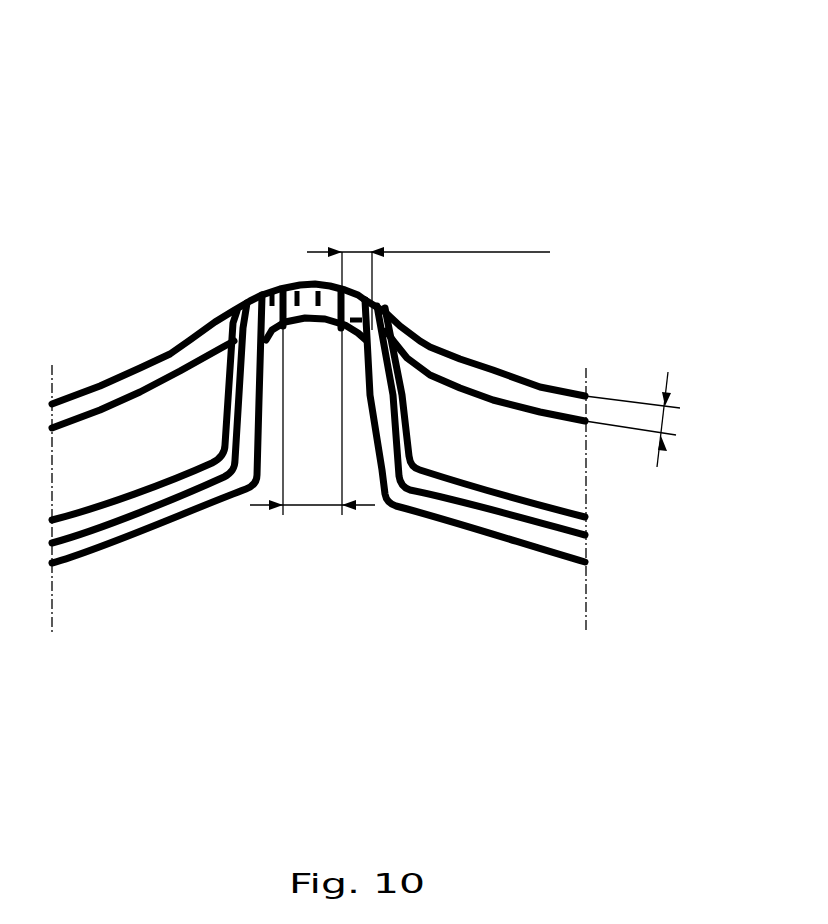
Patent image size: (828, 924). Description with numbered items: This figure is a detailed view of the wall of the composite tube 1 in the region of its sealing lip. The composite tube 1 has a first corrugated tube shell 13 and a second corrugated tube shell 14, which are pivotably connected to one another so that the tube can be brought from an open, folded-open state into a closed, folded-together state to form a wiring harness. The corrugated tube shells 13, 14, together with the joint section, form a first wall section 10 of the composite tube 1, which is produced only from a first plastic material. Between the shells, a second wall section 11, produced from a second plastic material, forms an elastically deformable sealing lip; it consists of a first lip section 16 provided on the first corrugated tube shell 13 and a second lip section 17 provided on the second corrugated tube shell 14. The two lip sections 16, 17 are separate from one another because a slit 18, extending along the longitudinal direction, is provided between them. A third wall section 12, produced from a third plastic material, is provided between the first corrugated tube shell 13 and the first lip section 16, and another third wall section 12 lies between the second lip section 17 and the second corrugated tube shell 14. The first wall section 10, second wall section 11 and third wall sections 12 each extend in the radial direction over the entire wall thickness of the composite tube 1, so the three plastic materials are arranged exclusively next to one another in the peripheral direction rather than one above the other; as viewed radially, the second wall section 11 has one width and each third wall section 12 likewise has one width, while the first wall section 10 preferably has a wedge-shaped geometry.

The composite tube 1 is at (162, 90).
The first wall section 10 is at (108, 622).
The second wall section 11 is at (244, 128).
The third wall section 12 is at (268, 286).
The first corrugated tube shell 13 is at (120, 553).
The second corrugated tube shell 14 is at (407, 517).
The first lip section 16 is at (297, 278).
The second lip section 17 is at (318, 280).
The slit 18 is at (310, 328).